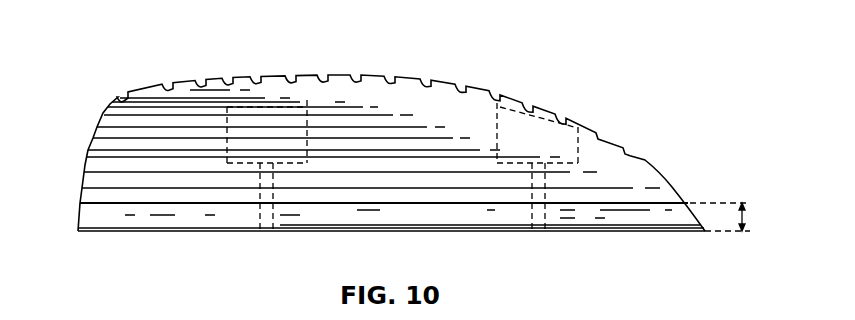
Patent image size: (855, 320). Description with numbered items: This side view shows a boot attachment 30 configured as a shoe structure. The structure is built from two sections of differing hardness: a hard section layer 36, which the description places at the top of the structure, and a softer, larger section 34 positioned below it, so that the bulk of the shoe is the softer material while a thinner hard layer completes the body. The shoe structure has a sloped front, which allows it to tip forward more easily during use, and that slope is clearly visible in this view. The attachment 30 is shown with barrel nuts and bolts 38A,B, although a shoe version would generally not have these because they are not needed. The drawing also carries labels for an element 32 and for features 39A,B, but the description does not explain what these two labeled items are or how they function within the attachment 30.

The attachment 30 is at (630, 46).
The base layer 32 is at (78, 215).
The softer larger section 34 is at (98, 168).
The hard section layer 36 is at (744, 213).
The barrel nuts and bolts 38A,B is at (530, 107).
The left teeth region 39A,B is at (265, 93).